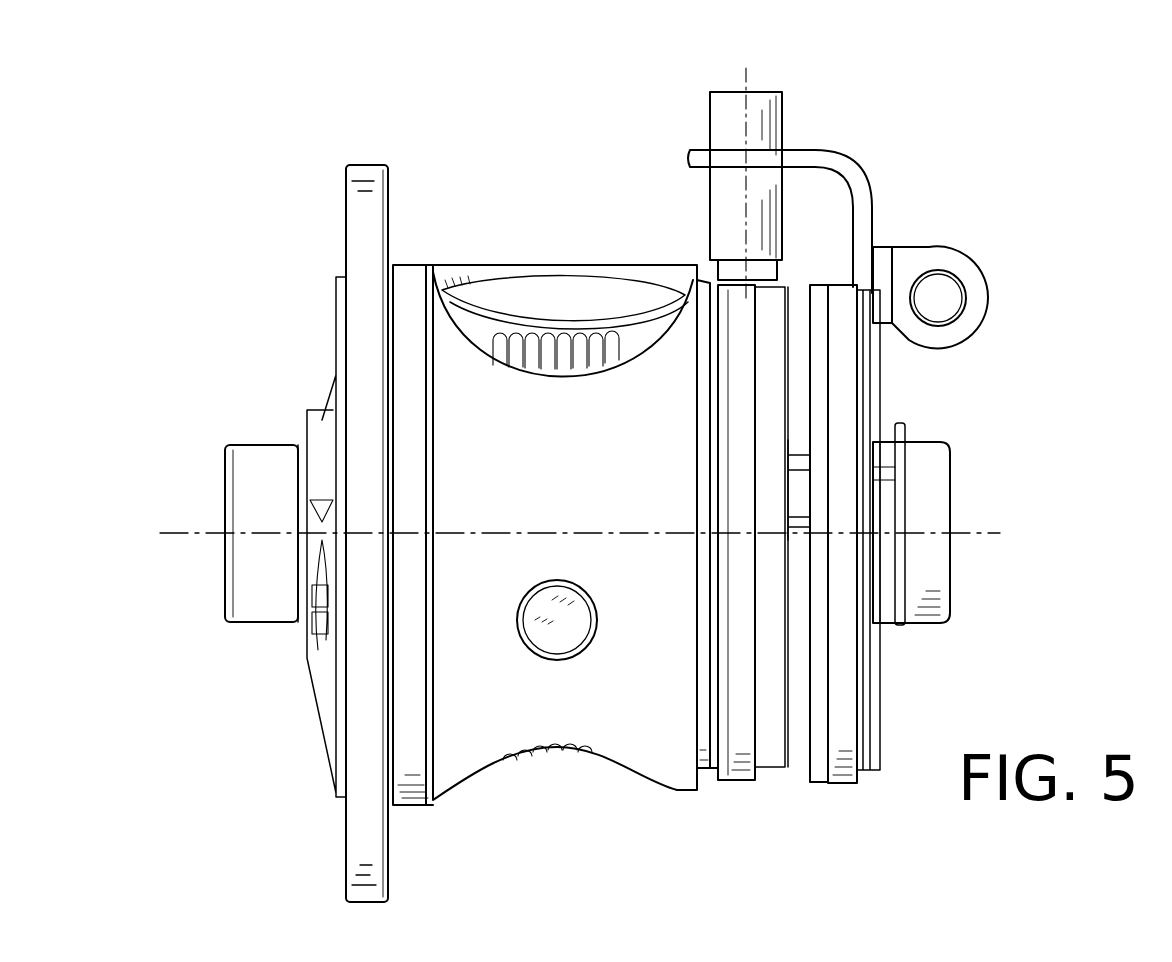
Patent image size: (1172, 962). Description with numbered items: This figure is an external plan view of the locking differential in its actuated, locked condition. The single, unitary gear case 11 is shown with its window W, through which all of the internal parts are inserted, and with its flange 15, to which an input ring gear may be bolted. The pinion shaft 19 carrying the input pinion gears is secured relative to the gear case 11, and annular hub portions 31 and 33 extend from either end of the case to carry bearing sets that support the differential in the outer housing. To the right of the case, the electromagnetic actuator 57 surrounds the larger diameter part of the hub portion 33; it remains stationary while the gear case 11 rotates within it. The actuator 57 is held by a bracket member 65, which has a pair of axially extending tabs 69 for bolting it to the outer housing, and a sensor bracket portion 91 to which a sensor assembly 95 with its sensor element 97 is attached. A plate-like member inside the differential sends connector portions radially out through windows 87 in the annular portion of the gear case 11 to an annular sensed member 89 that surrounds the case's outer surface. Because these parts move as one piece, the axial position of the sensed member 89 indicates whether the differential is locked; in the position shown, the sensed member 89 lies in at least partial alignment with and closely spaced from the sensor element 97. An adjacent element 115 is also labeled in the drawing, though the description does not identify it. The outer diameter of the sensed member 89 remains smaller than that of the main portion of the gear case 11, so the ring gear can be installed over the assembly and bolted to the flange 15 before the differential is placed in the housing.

The gear case 11 is at (475, 723).
The flange 15 is at (377, 233).
The pinion shaft 19 is at (561, 627).
The annular hub portion 31 is at (273, 460).
The annular hub portion 33 is at (928, 478).
The electromagnetic actuator 57 is at (848, 802).
The bracket member 65 is at (877, 388).
The axially extending tab 69 is at (967, 327).
The window 87 is at (800, 478).
The annular sensed member 89 is at (768, 776).
The sensor bracket portion 91 is at (850, 178).
The sensor assembly 95 is at (684, 136).
The sensor element 97 is at (730, 270).
The spacer disc 115 is at (798, 297).
The window W is at (480, 298).